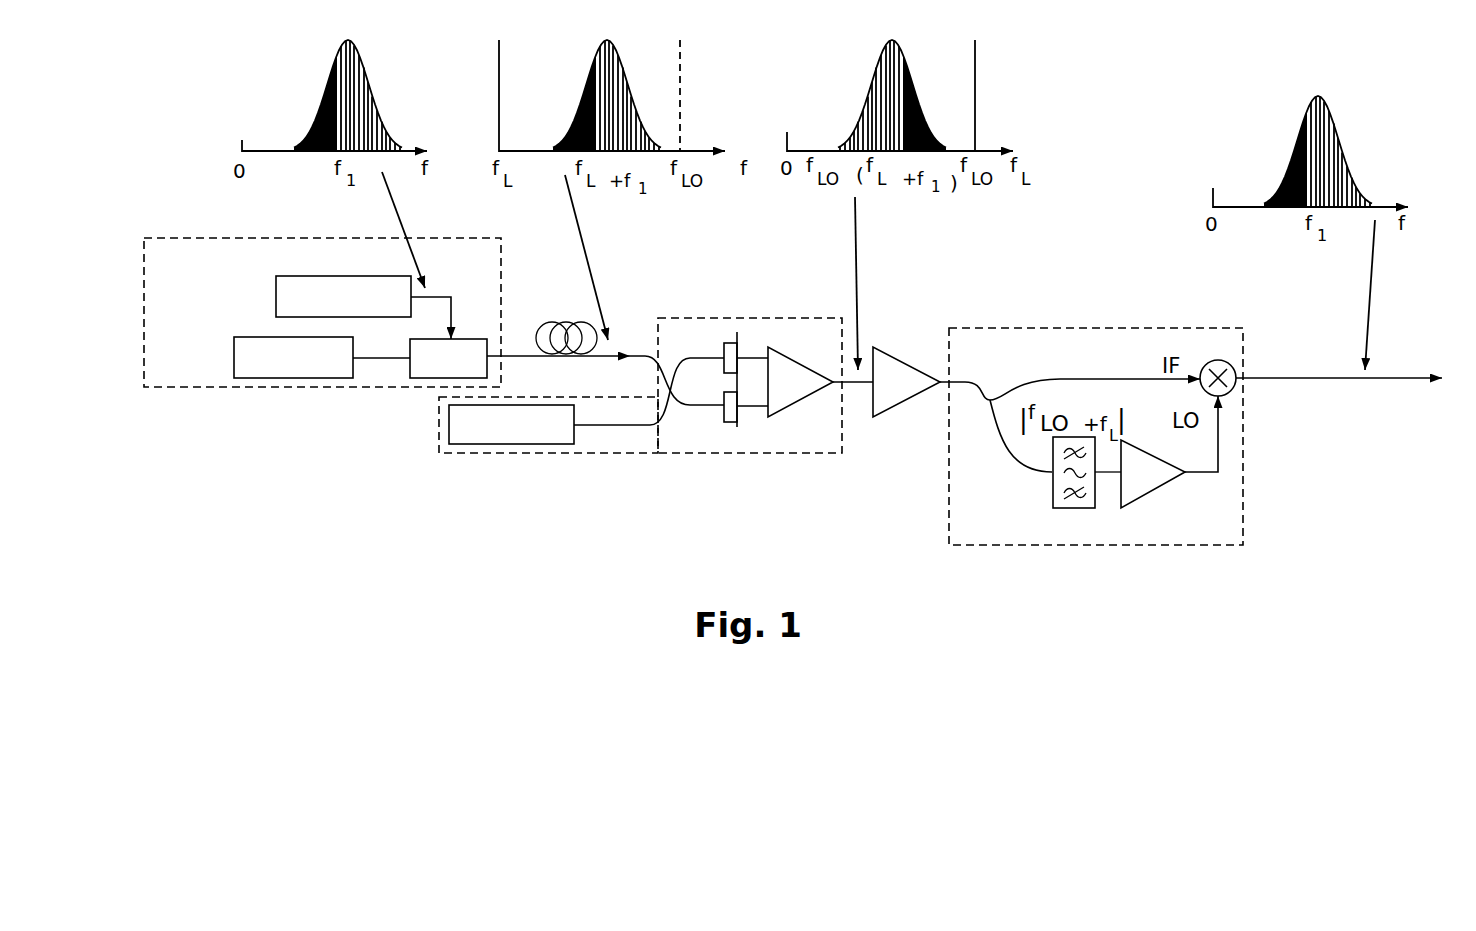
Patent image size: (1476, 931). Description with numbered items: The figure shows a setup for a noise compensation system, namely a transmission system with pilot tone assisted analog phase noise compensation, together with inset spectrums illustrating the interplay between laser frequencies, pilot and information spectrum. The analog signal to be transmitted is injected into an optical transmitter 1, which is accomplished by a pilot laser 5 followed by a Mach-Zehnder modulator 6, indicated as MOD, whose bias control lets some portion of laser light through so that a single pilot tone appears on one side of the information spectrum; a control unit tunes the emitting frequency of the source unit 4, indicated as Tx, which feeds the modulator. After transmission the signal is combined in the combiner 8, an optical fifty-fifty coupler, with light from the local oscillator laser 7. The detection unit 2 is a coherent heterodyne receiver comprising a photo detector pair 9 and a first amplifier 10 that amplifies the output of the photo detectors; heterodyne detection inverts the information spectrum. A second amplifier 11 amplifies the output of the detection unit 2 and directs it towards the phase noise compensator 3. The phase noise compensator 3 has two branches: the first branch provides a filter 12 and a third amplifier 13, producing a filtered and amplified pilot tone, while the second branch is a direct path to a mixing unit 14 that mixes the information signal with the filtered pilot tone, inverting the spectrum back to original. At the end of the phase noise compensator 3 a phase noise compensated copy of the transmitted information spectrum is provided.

The optical transmitter 1 is at (183, 383).
The detection unit 2 is at (818, 425).
The phase noise compensator 3 is at (1228, 505).
The source unit 4 is at (278, 292).
The pilot laser 5 is at (234, 357).
The Mach-Zehnder modulator 6 is at (465, 344).
The local oscillator laser 7 is at (470, 445).
The combiner 8 is at (705, 403).
The photo detector pair 9 is at (731, 420).
The first amplifier 10 is at (803, 370).
The second amplifier 11 is at (888, 400).
The filter 12 is at (1052, 480).
The third amplifier 13 is at (1140, 485).
The mixing unit 14 is at (1222, 361).